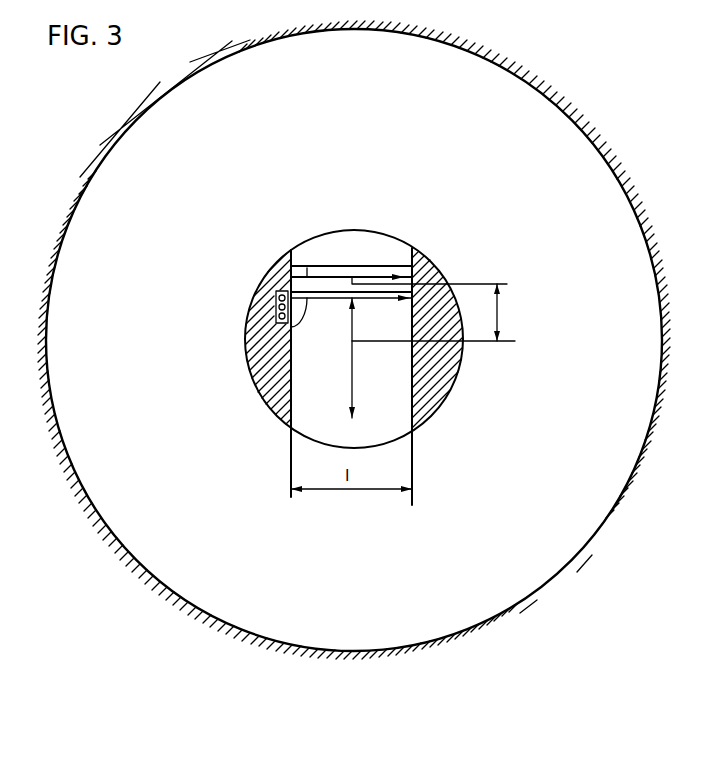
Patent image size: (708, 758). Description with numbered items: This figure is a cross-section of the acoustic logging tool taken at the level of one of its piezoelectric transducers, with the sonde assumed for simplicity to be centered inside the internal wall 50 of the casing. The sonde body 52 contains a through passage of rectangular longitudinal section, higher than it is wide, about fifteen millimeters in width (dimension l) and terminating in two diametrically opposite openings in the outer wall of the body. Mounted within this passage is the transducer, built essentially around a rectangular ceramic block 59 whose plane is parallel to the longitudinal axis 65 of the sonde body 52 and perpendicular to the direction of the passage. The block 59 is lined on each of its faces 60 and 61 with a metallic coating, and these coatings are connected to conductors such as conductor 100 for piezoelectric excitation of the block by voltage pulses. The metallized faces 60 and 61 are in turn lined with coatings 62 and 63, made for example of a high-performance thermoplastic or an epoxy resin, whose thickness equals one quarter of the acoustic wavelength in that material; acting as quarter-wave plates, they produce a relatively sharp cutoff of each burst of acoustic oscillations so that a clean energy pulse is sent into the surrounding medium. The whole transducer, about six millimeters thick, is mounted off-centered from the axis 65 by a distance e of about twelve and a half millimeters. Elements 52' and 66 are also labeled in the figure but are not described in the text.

The internal wall 50 is at (50, 418).
The sonde body 52 is at (220, 283).
The sealing element 52' is at (250, 263).
The rectangular ceramic block 59 is at (412, 248).
The face 60 is at (386, 270).
The face 61 is at (420, 284).
The coating 62 is at (320, 266).
The coating 63 is at (270, 337).
The longitudinal axis 65 is at (355, 352).
The intermediate channel 66 is at (352, 277).
The conductor 100 is at (277, 298).